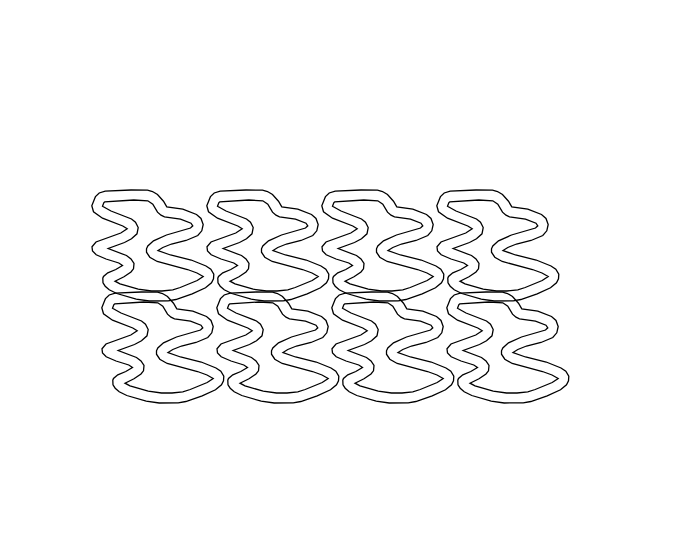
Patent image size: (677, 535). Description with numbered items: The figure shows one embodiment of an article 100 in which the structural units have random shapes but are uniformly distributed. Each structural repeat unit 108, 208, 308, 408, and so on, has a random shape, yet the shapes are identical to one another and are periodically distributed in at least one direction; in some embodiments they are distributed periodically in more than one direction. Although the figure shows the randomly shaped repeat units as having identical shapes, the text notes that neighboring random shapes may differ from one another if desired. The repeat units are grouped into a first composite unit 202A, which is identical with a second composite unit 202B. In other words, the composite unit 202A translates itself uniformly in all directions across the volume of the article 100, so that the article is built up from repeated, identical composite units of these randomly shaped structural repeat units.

The article 100 is at (514, 55).
The structural repeat unit 108 is at (149, 189).
The structural repeat unit 208 is at (228, 188).
The structural repeat unit 308 is at (375, 188).
The structural repeat unit 408 is at (487, 188).
The first composite unit 202A is at (573, 185).
The second composite unit 202B is at (572, 293).